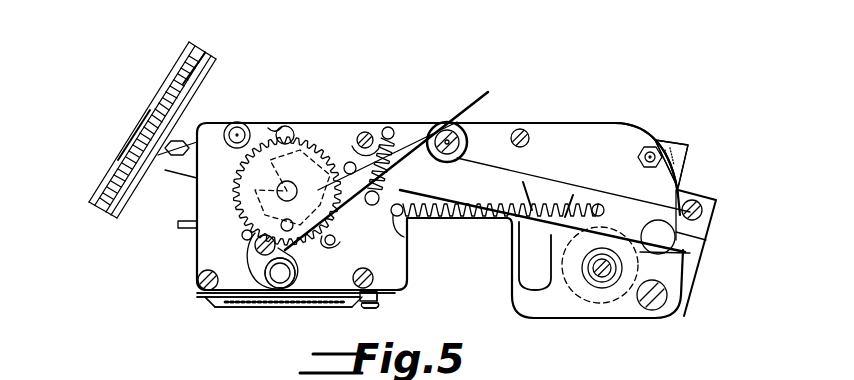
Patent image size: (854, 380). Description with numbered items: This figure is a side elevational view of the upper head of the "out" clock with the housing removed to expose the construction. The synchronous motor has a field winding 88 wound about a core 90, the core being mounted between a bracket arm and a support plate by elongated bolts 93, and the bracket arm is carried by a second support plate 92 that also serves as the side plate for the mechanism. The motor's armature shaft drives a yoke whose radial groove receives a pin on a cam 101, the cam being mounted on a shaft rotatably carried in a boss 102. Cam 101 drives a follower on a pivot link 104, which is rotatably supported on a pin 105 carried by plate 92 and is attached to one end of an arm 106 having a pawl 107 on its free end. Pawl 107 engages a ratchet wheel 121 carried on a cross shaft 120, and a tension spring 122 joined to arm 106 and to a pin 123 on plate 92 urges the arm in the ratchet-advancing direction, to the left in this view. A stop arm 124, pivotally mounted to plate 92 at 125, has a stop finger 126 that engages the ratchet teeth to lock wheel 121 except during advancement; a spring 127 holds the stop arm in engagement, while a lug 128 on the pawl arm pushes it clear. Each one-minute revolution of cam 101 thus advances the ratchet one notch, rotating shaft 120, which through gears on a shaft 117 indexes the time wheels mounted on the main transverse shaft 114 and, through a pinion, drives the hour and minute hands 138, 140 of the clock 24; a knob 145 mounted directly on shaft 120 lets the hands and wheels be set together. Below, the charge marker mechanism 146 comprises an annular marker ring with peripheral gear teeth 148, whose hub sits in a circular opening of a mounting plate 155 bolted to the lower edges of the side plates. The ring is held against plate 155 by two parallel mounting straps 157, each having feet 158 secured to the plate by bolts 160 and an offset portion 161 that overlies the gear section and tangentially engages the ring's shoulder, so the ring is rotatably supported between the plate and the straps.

The clock 24 is at (160, 71).
The minute hand 140 is at (175, 84).
The hour hand 138 is at (118, 160).
The knob 145 is at (268, 128).
The cross shaft 120 is at (278, 191).
The stop arm 124 is at (441, 124).
The pivot 125 is at (470, 110).
The pawl 107 is at (338, 148).
The lug 128 is at (358, 135).
The spring 127 is at (392, 168).
The second support plate 92 is at (612, 140).
The pin 105 is at (658, 146).
The field winding 88 is at (690, 150).
The core 90 is at (712, 228).
The pivot link 104 is at (690, 256).
The elongated bolts 93 is at (672, 315).
The boss 102 is at (618, 300).
The cam 101 is at (592, 300).
The arm 106 is at (528, 188).
The tension spring 122 is at (480, 220).
The pin 123 is at (405, 240).
The mounting plate 155 is at (385, 278).
The bolts 160 is at (378, 306).
The offset portion 161 is at (362, 310).
The gear teeth 148 is at (300, 307).
The charge marker mechanism 146 is at (265, 306).
The mounting straps 157 is at (238, 310).
The feet 158 is at (215, 303).
The main transverse shaft 114 is at (270, 280).
The stop finger 126 is at (305, 252).
The shaft 117 is at (343, 242).
The ratchet wheel 121 is at (241, 234).